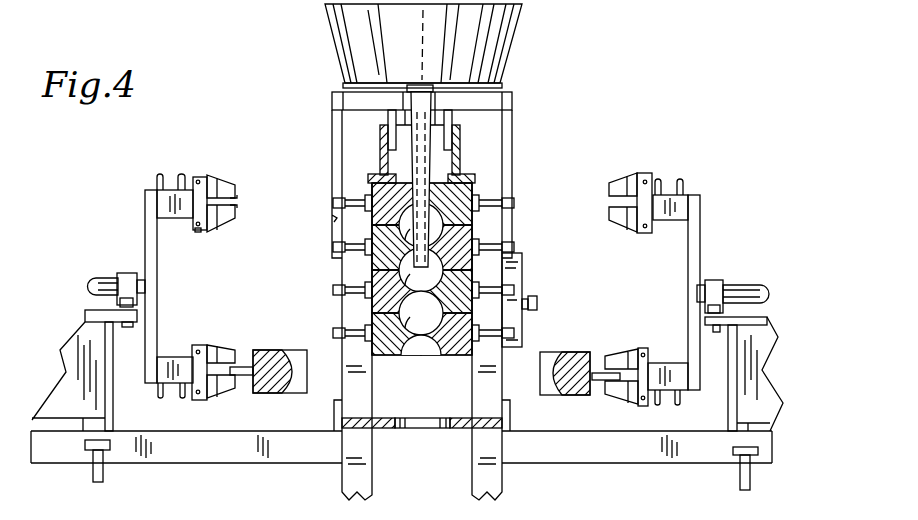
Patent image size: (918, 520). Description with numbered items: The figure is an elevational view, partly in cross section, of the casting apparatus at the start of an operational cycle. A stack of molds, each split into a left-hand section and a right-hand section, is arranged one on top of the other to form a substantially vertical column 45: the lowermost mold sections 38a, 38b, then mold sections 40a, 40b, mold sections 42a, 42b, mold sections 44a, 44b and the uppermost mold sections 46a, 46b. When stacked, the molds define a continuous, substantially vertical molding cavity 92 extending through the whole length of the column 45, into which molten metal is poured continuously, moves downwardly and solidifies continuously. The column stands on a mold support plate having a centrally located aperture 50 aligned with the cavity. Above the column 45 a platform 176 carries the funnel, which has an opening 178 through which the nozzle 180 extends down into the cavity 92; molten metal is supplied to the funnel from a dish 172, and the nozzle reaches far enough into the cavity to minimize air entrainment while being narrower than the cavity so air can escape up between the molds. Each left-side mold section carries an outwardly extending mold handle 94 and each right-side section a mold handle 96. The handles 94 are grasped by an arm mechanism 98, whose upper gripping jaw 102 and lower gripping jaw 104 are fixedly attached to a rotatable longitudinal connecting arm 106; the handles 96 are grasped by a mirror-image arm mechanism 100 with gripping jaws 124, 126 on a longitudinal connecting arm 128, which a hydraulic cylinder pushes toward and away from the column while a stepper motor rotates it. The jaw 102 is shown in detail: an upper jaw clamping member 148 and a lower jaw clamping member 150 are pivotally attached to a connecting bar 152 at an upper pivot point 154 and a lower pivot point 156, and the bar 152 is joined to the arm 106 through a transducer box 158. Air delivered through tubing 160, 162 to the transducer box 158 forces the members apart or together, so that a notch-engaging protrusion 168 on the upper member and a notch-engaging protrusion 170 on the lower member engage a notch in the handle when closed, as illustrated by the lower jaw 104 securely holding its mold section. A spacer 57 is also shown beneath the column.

The dish 172 is at (522, 30).
The platform 176 is at (358, 100).
The opening 178 is at (432, 100).
The nozzle 180 is at (418, 142).
The mold section 46a is at (370, 178).
The mold section 46b is at (464, 172).
The vertical column 45 is at (481, 186).
The mold section 44a is at (373, 230).
The mold section 44b is at (467, 232).
The mold section 42a is at (373, 273).
The mold section 42b is at (470, 276).
The mold section 40a is at (388, 355).
The mold section 40b is at (452, 355).
The molding cavity 92 is at (428, 322).
The mold handle 94 is at (345, 340).
The mold handle 96 is at (490, 333).
The aperture 50 is at (410, 430).
The spacer 57 is at (460, 430).
The arm mechanism 98 is at (117, 272).
The connecting bar 152 is at (197, 200).
The longitudinal connecting arm 106 is at (145, 373).
The tubing 160 is at (158, 178).
The tubing 162 is at (182, 175).
The upper gripping jaw 102 is at (226, 194).
The upper pivot point 154 is at (200, 177).
The upper jaw clamping member 148 is at (218, 182).
The lower jaw clamping member 150 is at (225, 230).
The notch-engaging protrusion 168 is at (232, 199).
The notch-engaging protrusion 170 is at (232, 206).
The transducer box 158 is at (196, 224).
The lower pivot point 156 is at (198, 232).
The lower gripping jaw 104 is at (207, 340).
The mold section 38a is at (268, 350).
The arm mechanism 100 is at (684, 313).
The longitudinal connecting arm 128 is at (700, 253).
The gripping jaw 124 is at (633, 172).
The gripping jaw 126 is at (622, 400).
The mold section 38b is at (572, 352).